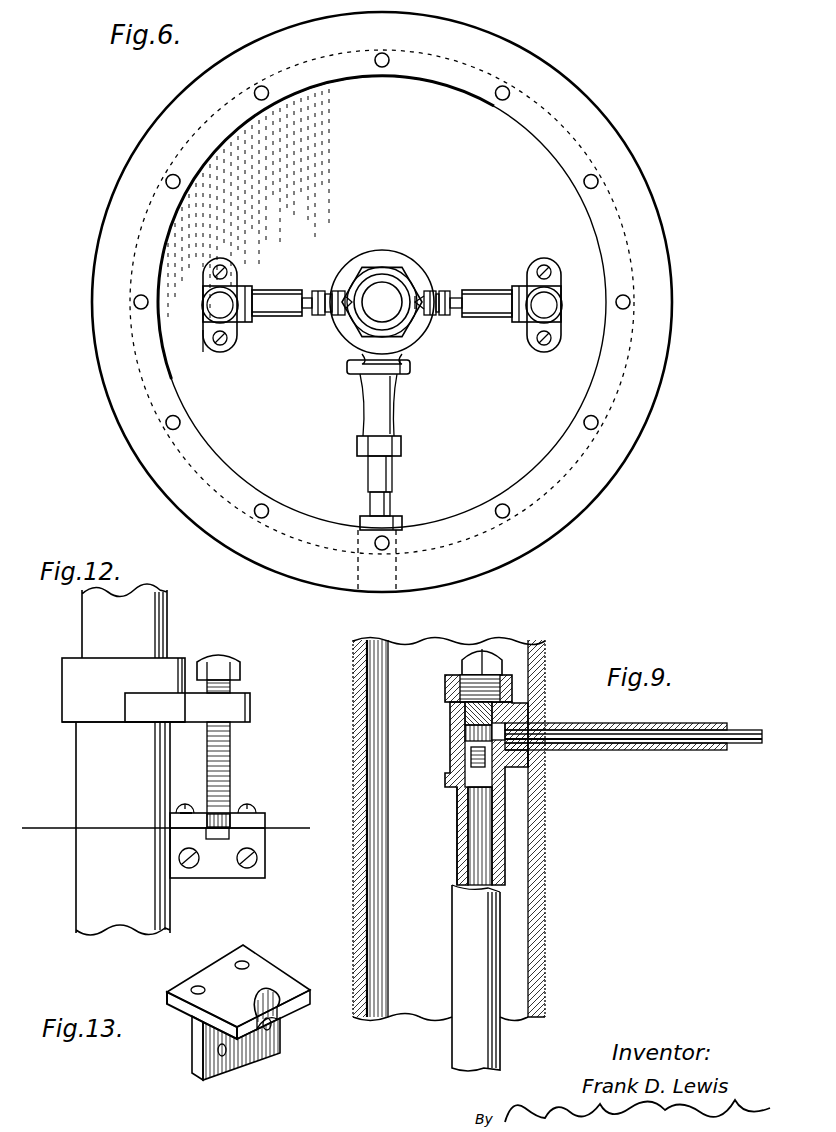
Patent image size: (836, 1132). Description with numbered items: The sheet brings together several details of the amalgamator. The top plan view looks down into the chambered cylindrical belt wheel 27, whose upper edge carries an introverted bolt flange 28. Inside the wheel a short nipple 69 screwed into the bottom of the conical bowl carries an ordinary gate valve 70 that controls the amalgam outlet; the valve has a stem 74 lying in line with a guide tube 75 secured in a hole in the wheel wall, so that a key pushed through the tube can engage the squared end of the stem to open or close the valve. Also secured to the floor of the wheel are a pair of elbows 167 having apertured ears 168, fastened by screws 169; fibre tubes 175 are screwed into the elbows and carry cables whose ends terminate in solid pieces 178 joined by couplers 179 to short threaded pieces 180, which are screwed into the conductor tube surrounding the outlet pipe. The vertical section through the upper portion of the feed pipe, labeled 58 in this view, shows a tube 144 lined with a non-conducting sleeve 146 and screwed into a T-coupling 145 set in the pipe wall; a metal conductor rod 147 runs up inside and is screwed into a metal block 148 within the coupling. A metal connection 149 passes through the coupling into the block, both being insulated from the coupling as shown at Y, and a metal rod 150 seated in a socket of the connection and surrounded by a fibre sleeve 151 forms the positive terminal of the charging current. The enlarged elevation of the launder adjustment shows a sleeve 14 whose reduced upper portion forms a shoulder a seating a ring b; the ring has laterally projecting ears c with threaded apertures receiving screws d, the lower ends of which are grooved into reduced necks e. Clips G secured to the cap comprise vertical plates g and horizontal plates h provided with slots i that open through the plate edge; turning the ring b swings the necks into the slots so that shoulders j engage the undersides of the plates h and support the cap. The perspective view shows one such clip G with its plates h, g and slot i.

In FIG. 6, the chambered cylindrical belt wheel 27 is at (283, 206).
In FIG. 6, the introverted bolt flange 28 is at (224, 456).
In FIG. 6, the short nipple 69 is at (402, 280).
In FIG. 6, the gate valve 70 is at (352, 272).
In FIG. 6, the valve stem 74 is at (392, 478).
In FIG. 6, the guide tube 75 is at (358, 518).
In FIG. 6, the elbows 167 is at (240, 287).
In FIG. 6, the apertured ears 168 is at (230, 336).
In FIG. 6, the screws 169 is at (208, 340).
In FIG. 6, the fibre tubes 175 is at (286, 290).
In FIG. 6, the solid pieces 178 is at (312, 314).
In FIG. 6, the couplers 179 is at (328, 315).
In FIG. 6, the short threaded pieces 180 is at (428, 318).
In FIG. 12, the rings b is at (62, 664).
In FIG. 12, the shoulders a is at (72, 723).
In FIG. 12, the laterally projecting ears c is at (250, 703).
In FIG. 12, the screws d is at (232, 746).
In FIG. 12, the sleeve 14 is at (75, 772).
In FIG. 12, the clips G is at (252, 813).
In FIG. 13, the clips G is at (200, 1020).
In FIG. 12, the horizontal plates h is at (248, 830).
In FIG. 13, the horizontal plates h is at (272, 975).
In FIG. 12, the reduced necks e is at (262, 815).
In FIG. 12, the slots i is at (206, 808).
In FIG. 13, the slots i is at (286, 1010).
In FIG. 12, the vertical plates g is at (237, 867).
In FIG. 13, the vertical plates g is at (247, 1045).
In FIG. 12, the shoulders j is at (216, 840).
In FIG. 9, the insulation Y is at (450, 702).
In FIG. 9, the T-coupling 145 is at (462, 727).
In FIG. 9, the metal block 148 is at (470, 755).
In FIG. 9, the metal connection 149 is at (545, 756).
In FIG. 9, the metal rod 150 is at (638, 732).
In FIG. 9, the fibre sleeve 151 is at (652, 743).
In FIG. 9, the metal conductor rod 147 is at (475, 815).
In FIG. 9, the non-conducting sleeve 146 is at (460, 848).
In FIG. 9, the tube 144 is at (458, 932).
In FIG. 9, the casing pipe 58 is at (546, 905).